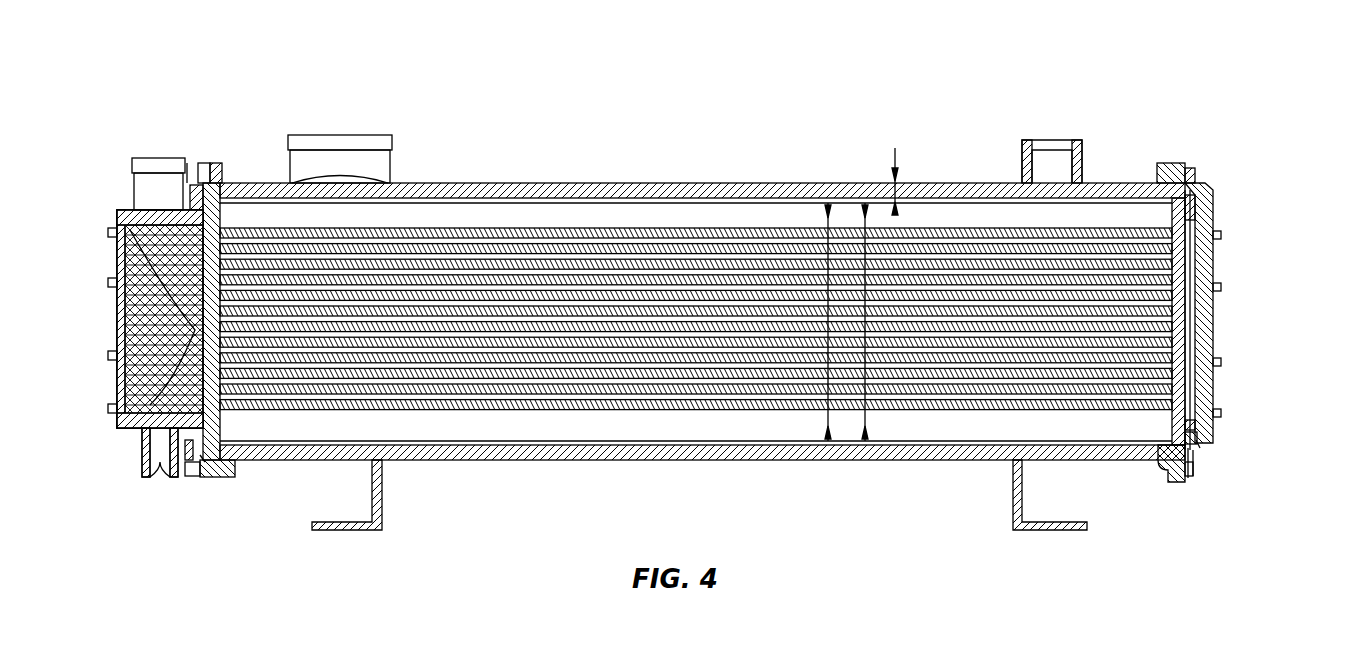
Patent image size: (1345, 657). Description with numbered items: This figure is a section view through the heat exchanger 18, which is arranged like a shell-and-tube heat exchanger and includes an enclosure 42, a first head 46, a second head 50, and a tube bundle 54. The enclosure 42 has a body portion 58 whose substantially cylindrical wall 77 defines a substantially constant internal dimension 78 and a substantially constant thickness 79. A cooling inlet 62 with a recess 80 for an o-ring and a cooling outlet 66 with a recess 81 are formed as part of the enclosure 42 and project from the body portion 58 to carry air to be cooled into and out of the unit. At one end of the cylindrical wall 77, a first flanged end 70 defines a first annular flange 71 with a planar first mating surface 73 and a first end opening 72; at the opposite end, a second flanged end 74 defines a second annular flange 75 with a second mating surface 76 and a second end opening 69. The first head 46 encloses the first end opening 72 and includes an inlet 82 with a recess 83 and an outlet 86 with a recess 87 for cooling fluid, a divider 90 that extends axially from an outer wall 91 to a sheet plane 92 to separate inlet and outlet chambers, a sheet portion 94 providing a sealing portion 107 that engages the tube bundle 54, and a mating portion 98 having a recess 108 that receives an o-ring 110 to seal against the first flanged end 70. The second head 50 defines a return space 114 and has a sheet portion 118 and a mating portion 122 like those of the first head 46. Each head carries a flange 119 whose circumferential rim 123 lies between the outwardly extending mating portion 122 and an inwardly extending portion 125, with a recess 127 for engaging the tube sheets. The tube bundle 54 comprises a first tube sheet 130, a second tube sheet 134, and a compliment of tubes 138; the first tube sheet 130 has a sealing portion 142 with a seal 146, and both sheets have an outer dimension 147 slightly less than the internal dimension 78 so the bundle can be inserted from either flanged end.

The heat exchanger 18 is at (1074, 82).
The enclosure 42 is at (712, 118).
The first head 46 is at (100, 130).
The second head 50 is at (1226, 147).
The tube bundle 54 is at (962, 435).
The body portion 58 is at (605, 178).
The cooling inlet 62 is at (1060, 150).
The cooling outlet 66 is at (338, 135).
The second end opening 69 is at (1200, 312).
The first flanged end 70 is at (250, 105).
The first annular flange 71 is at (220, 163).
The first end opening 72 is at (130, 268).
The first mating surface 73 is at (204, 163).
The second flanged end 74 is at (1150, 145).
The second annular flange 75 is at (1156, 172).
The second mating surface 76 is at (1185, 168).
The cylindrical wall 77 is at (656, 183).
The internal dimension 78 is at (860, 222).
The thickness 79 is at (896, 158).
The recess 80 is at (1078, 150).
The recess 81 is at (385, 138).
The inlet 82 is at (158, 478).
The recess 83 is at (150, 470).
The outlet 86 is at (147, 158).
The recess 87 is at (132, 168).
The divider 90 is at (128, 318).
The outer wall 91 is at (120, 358).
The sheet plane 92 is at (135, 385).
The sheet portion 94 is at (190, 462).
The mating portion 98 is at (200, 478).
The sealing portion 107 is at (270, 452).
The recess 108 is at (236, 462).
The o-ring 110 is at (262, 182).
The return space 114 is at (1212, 260).
The sheet portion 118 is at (1208, 448).
The flange 119 is at (1244, 463).
The mating portion 122 is at (1187, 480).
The circumferential rim 123 is at (1200, 455).
The inwardly extending portion 125 is at (1200, 440).
The recess 127 is at (1196, 430).
The first tube sheet 130 is at (222, 212).
The second tube sheet 134 is at (1170, 438).
The tubes 138 is at (672, 370).
The sealing portion 142 is at (1192, 183).
The seal 146 is at (1195, 222).
The outer dimension 147 is at (820, 220).